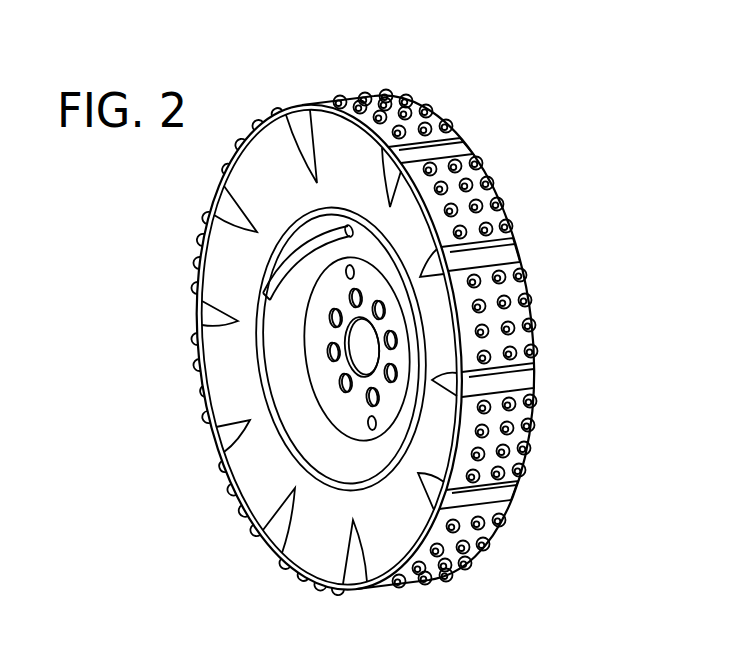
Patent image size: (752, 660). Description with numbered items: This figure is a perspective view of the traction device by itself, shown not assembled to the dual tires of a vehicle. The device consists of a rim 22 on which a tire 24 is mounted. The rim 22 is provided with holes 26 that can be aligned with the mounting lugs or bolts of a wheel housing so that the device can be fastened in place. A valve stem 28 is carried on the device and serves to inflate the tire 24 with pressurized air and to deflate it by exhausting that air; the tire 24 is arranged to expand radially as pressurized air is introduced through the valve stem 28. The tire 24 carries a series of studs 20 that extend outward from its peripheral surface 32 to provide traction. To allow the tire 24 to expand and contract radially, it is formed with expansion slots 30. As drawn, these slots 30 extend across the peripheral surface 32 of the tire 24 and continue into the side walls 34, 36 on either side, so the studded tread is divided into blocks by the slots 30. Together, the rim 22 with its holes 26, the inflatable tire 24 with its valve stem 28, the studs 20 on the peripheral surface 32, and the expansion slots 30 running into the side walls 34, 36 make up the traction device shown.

The studs 20 is at (418, 102).
The rim 22 is at (357, 393).
The tire 24 is at (227, 255).
The holes 26 is at (343, 385).
The valve stem 28 is at (310, 242).
The expansion slots 30 is at (517, 382).
The peripheral surface 32 is at (518, 290).
The side wall 34 is at (447, 432).
The side wall 36 is at (537, 417).